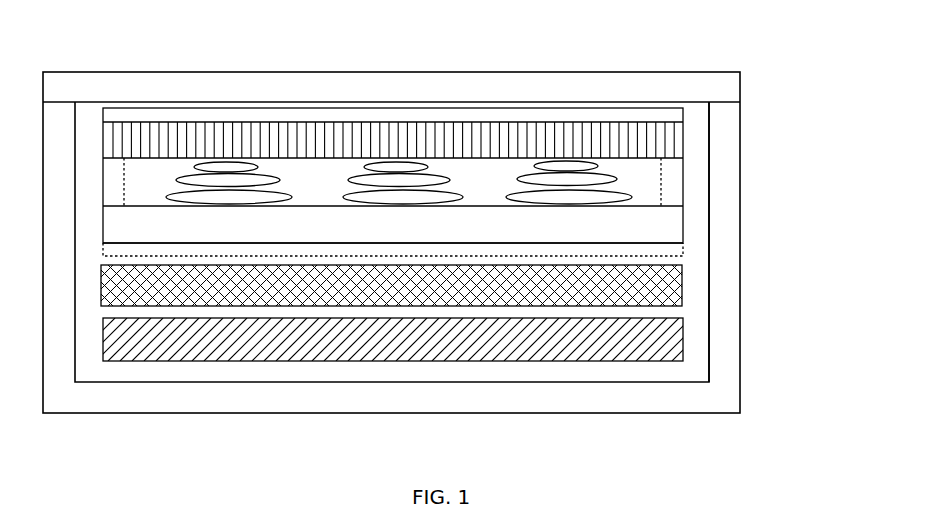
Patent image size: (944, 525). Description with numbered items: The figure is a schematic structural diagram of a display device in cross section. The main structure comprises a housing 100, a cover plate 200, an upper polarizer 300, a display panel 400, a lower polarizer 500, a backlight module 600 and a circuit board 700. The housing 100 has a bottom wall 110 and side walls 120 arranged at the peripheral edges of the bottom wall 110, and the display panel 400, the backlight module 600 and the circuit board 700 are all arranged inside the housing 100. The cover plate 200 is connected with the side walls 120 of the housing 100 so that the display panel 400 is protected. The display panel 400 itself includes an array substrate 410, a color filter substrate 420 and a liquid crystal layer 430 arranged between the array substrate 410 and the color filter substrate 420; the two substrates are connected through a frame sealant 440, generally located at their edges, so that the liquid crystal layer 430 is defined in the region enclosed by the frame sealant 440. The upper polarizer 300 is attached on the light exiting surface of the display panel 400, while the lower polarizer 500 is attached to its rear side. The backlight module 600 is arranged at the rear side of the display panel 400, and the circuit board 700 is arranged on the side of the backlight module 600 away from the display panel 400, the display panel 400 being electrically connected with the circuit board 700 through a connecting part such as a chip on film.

The housing 100 is at (309, 417).
The bottom wall 110 is at (625, 395).
The side walls 120 is at (740, 362).
The cover plate 200 is at (614, 71).
The upper polarizer 300 is at (671, 107).
The display panel 400 is at (493, 133).
The array substrate 410 is at (669, 232).
The color filter substrate 420 is at (664, 131).
The liquid crystal layer 430 is at (626, 193).
The frame sealant 440 is at (676, 163).
The lower polarizer 500 is at (673, 250).
The backlight module 600 is at (679, 273).
The circuit board 700 is at (678, 334).